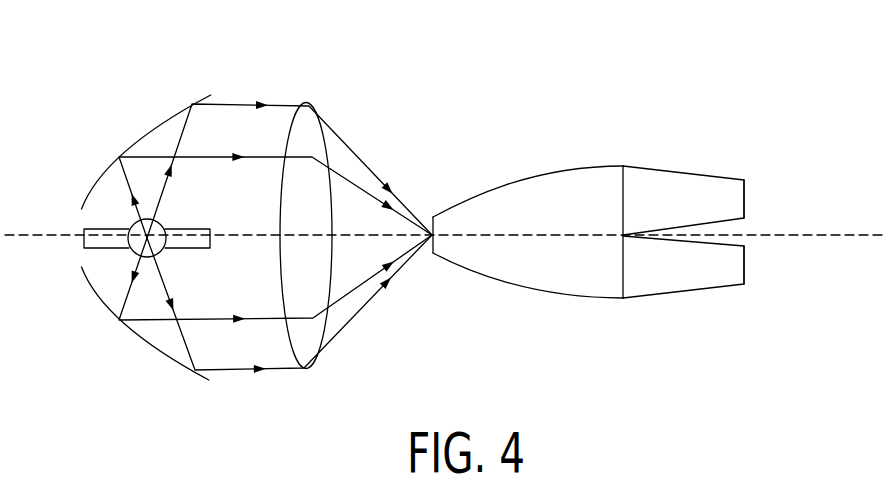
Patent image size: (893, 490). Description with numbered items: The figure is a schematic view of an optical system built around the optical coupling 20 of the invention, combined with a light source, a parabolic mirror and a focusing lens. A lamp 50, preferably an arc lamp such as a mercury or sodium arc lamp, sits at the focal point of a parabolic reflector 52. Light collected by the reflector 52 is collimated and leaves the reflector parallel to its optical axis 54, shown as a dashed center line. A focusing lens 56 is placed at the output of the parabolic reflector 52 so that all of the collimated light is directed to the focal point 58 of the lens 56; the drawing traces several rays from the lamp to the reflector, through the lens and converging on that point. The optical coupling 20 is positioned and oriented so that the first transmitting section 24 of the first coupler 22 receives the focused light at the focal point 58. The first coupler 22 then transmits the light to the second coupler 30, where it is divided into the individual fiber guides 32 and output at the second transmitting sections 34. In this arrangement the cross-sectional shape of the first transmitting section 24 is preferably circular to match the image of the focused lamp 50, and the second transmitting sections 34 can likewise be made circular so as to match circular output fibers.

The optical coupling 20 is at (635, 100).
The first coupler 22 is at (561, 276).
The first transmitting section 24 is at (428, 244).
The second coupler 30 is at (671, 145).
The individual fiber guides 32 is at (707, 188).
The second transmitting sections 34 is at (744, 197).
The lamp 50 is at (151, 281).
The parabolic reflector 52 is at (141, 112).
The optical axis 54 is at (41, 208).
The focusing lens 56 is at (303, 359).
The focal point 58 is at (426, 228).